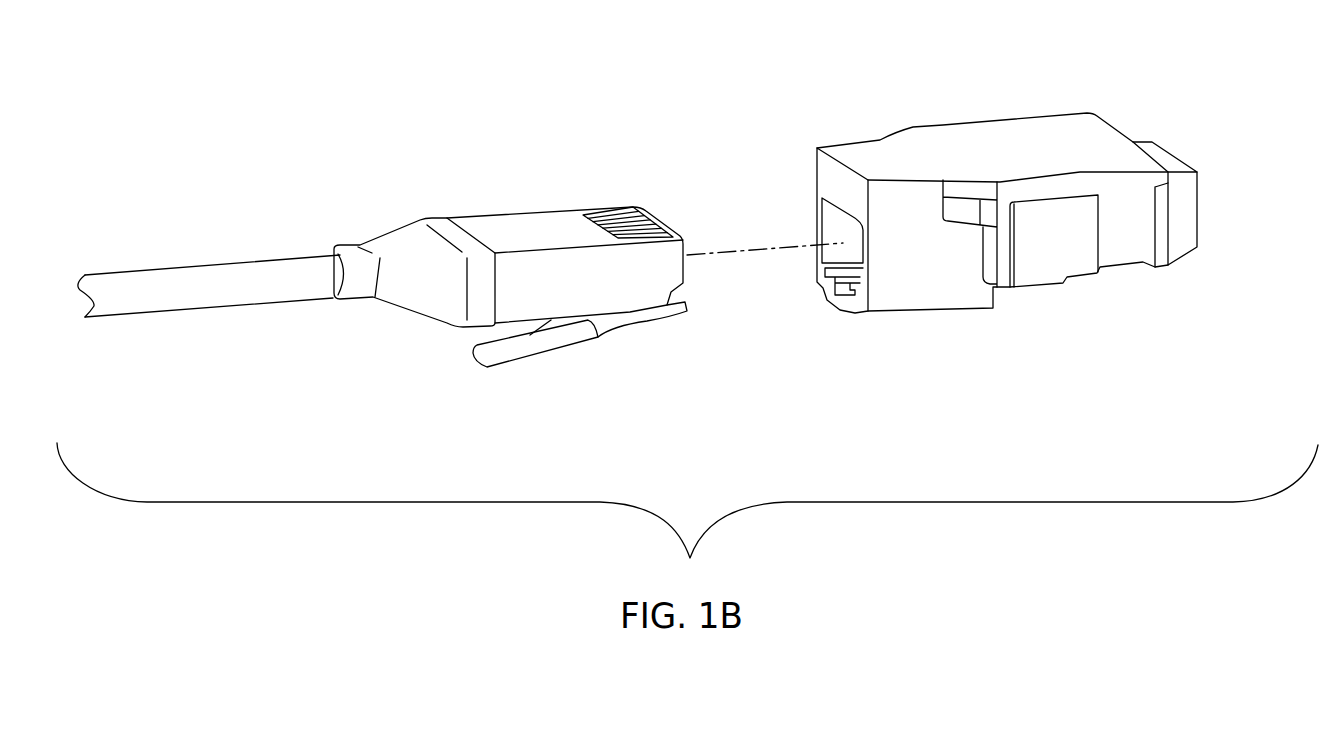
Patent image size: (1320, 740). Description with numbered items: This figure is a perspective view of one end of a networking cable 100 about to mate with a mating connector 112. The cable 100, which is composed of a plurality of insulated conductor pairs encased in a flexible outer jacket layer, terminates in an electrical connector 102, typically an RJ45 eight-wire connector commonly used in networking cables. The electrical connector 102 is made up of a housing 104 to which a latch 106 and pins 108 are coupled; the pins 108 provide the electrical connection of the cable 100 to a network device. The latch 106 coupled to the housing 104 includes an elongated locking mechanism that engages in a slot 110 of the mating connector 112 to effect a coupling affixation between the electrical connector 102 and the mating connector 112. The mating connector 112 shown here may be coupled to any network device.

The cable 100 is at (152, 297).
The electrical connector 102 is at (522, 227).
The housing 104 is at (419, 310).
The latch 106 is at (567, 345).
The pins 108 is at (617, 213).
The slot 110 is at (837, 230).
The mating connector 112 is at (998, 130).